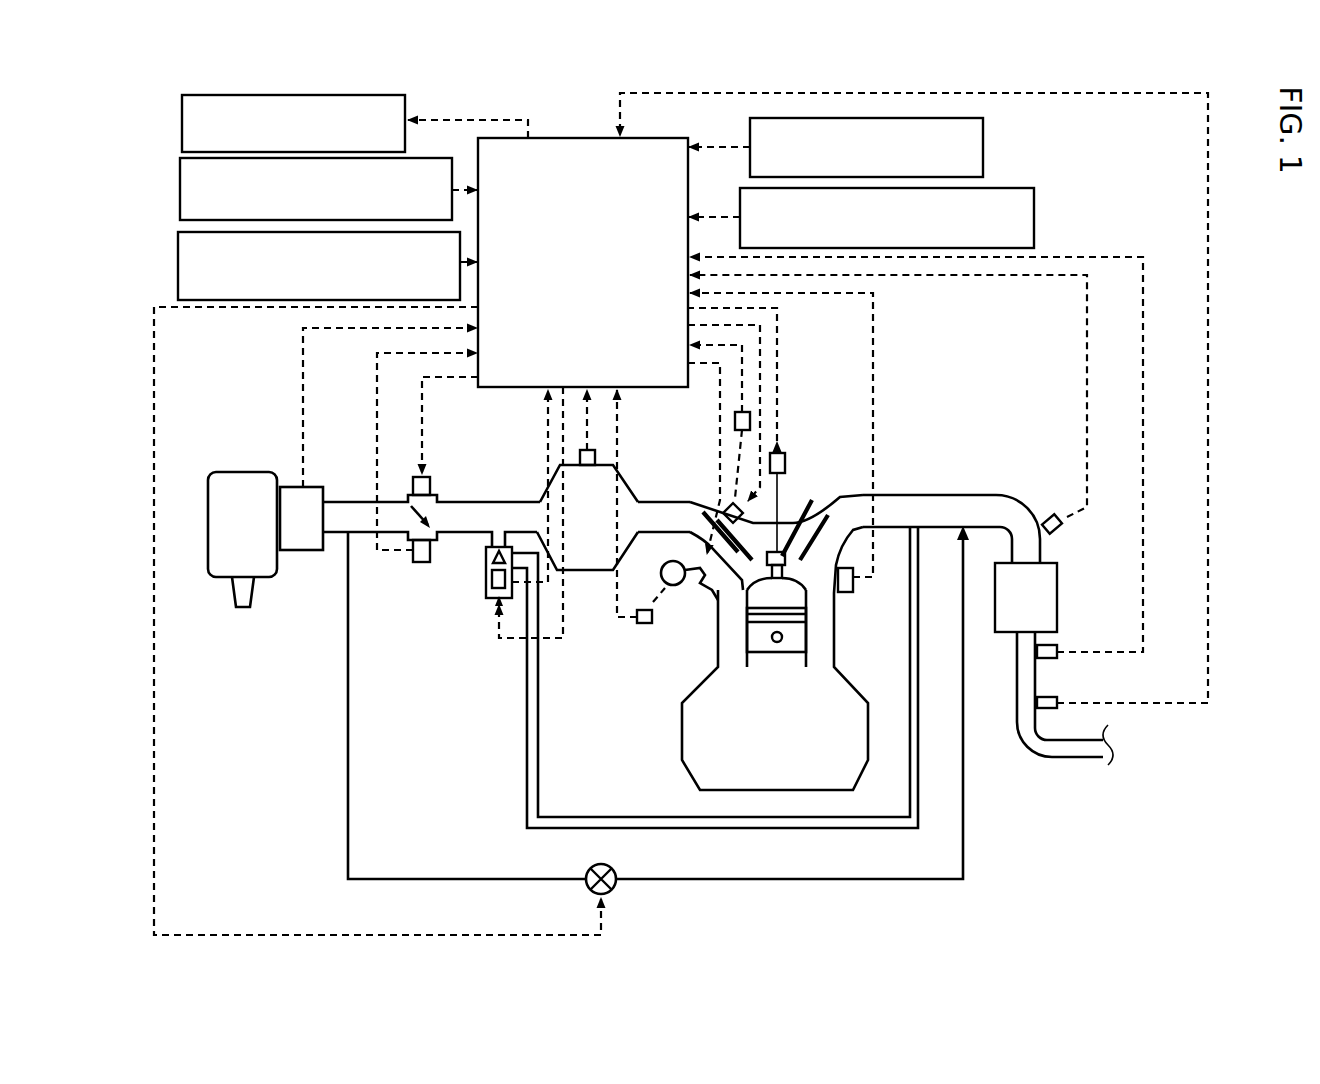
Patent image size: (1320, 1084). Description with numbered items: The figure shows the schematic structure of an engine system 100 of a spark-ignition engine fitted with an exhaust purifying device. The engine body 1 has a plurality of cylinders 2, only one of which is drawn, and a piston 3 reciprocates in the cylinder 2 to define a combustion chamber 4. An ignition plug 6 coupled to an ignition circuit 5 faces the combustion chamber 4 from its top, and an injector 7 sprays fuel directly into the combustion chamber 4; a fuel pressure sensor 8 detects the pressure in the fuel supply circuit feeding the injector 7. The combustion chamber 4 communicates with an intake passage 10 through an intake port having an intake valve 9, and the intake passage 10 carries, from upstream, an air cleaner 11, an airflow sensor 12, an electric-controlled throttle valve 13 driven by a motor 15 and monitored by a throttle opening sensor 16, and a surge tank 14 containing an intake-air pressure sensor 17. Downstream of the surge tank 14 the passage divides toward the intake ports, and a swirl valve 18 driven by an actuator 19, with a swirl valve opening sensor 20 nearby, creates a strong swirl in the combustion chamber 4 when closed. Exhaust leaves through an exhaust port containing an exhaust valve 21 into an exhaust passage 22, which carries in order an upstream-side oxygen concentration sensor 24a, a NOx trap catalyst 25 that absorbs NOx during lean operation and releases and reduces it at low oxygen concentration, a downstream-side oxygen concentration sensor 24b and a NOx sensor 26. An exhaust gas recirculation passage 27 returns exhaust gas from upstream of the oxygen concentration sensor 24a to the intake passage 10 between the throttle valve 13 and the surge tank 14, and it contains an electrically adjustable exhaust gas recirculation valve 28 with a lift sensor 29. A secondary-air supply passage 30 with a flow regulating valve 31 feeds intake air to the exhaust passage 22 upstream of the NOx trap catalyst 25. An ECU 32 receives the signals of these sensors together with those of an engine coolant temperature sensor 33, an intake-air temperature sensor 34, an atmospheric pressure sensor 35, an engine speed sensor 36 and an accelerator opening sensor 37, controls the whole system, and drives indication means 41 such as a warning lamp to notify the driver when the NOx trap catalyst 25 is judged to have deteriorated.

The engine body 1 is at (676, 724).
The cylinder 2 is at (757, 660).
The piston 3 is at (788, 645).
The combustion chamber 4 is at (782, 593).
The ignition circuit 5 is at (786, 462).
The ignition plug 6 is at (789, 550).
The injector 7 is at (705, 588).
The fuel pressure sensor 8 is at (645, 625).
The intake valve 9 is at (750, 627).
The intake passage 10 is at (486, 518).
The air cleaner 11 is at (240, 480).
The airflow sensor 12 is at (300, 548).
The electric-controlled throttle valve 13 is at (440, 522).
The surge tank 14 is at (590, 533).
The motor 15 is at (432, 485).
The throttle opening sensor 16 is at (418, 560).
The intake-air pressure sensor 17 is at (597, 458).
The swirl valve 18 is at (720, 515).
The actuator 19 is at (722, 500).
The swirl valve opening sensor 20 is at (735, 418).
The exhaust valve 21 is at (822, 555).
The exhaust passage 22 is at (893, 515).
The upstream-side oxygen concentration sensor 24a is at (1058, 530).
The downstream-side oxygen concentration sensor 24b is at (1050, 645).
The NOx trap catalyst 25 is at (1047, 598).
The NOx sensor 26 is at (1048, 697).
The exhaust gas recirculation passage 27 is at (587, 823).
The exhaust gas recirculation valve 28 is at (486, 557).
The lift sensor 29 is at (493, 603).
The secondary-air supply passage 30 is at (350, 768).
The flow regulating valve 31 is at (612, 872).
The ECU 32 is at (652, 157).
The engine coolant temperature sensor 33 is at (845, 592).
The intake-air temperature sensor 34 is at (180, 183).
The atmospheric pressure sensor 35 is at (178, 256).
The engine speed sensor 36 is at (983, 133).
The accelerator opening sensor 37 is at (1034, 198).
The indication means 41 is at (182, 111).
The engine system 100 is at (1000, 830).